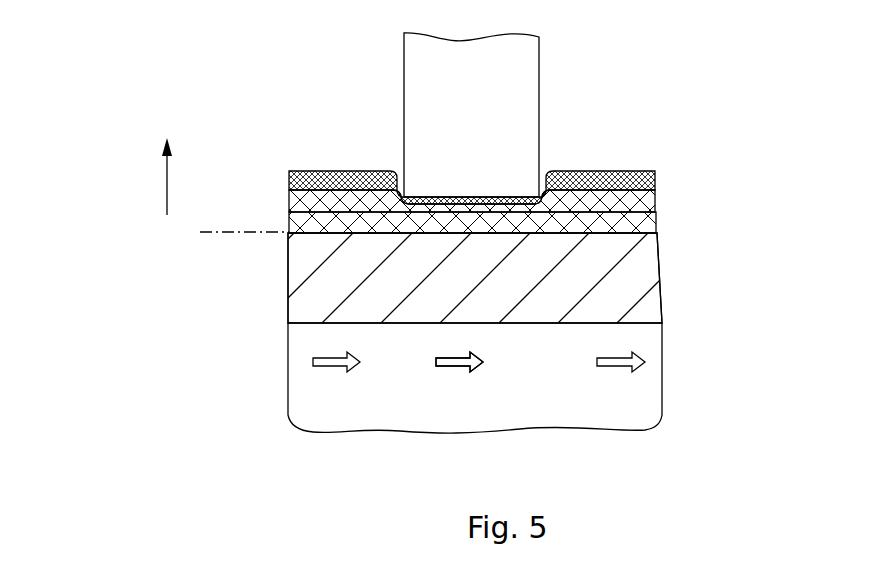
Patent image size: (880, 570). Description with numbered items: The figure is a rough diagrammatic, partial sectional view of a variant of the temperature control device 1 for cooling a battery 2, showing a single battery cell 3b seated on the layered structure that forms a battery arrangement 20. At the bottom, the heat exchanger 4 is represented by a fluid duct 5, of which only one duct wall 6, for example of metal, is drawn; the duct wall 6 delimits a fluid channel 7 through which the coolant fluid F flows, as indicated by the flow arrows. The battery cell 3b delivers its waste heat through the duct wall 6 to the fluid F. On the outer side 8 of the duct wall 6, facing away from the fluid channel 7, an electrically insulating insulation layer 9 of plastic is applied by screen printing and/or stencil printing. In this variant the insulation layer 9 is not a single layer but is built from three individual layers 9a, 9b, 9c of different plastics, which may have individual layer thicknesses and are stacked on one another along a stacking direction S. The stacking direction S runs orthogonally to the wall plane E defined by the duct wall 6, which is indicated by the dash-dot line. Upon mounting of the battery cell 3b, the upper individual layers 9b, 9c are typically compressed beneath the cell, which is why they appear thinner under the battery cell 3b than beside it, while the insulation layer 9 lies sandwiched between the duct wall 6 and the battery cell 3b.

The temperature control device 1 is at (681, 404).
The battery 2 is at (384, 98).
The battery cell 3b is at (484, 105).
The heat exchanger 4 is at (262, 288).
The fluid duct 5 is at (303, 226).
The duct wall 6 is at (662, 290).
The fluid channel 7 is at (536, 388).
The outer side 8 is at (625, 222).
The insulation layer 9 is at (730, 157).
The individual layer 9a is at (656, 222).
The individual layer 9b is at (653, 196).
The individual layer 9c is at (655, 176).
The battery arrangement 20 is at (646, 116).
The stacking direction S is at (167, 180).
The wall plane E is at (210, 230).
The fluid F is at (453, 368).